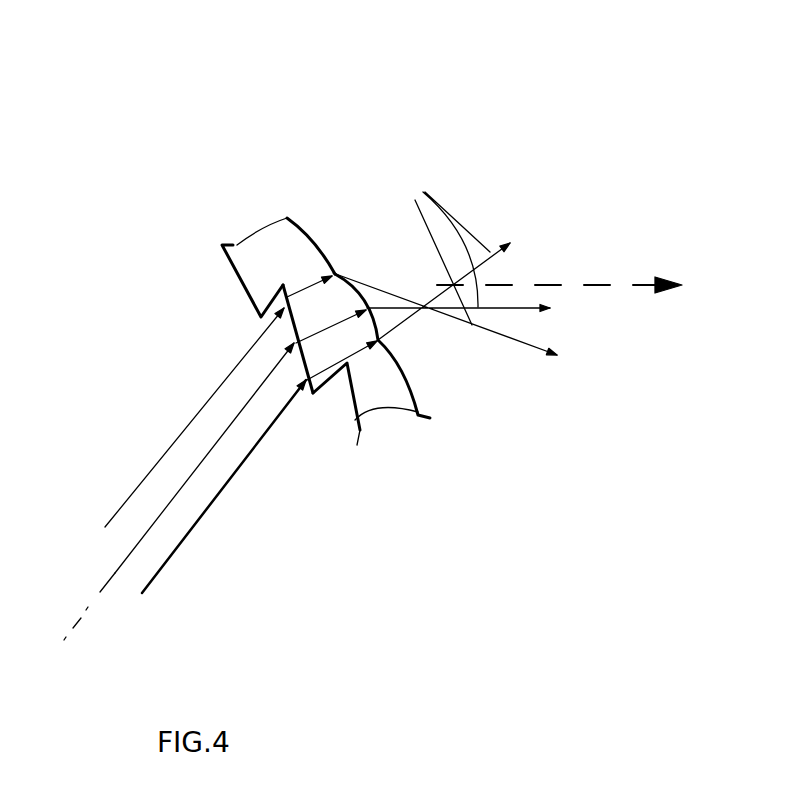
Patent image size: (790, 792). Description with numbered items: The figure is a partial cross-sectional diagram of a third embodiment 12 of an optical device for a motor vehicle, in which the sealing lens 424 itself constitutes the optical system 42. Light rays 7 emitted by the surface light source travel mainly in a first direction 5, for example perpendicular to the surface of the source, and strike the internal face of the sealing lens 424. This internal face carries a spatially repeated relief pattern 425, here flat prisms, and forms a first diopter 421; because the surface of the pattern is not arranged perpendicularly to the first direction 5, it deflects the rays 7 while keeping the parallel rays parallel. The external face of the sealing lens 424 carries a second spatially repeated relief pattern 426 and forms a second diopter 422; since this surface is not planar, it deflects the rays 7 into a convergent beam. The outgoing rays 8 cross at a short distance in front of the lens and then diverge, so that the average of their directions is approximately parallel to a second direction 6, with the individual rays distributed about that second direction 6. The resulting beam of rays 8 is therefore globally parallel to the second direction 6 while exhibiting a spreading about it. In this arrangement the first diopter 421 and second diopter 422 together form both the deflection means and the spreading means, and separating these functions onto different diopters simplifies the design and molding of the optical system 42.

The optical system 42 is at (351, 165).
The first diopter 421 is at (242, 287).
The second diopter 422 is at (302, 233).
The sealing lens 424 is at (380, 405).
The relief pattern 425 is at (300, 386).
The relief pattern 426 is at (375, 318).
The third embodiment 12 is at (140, 278).
The beam of rays 7 is at (181, 542).
The first direction 5 is at (98, 597).
The outgoing rays 8 is at (445, 268).
The second direction 6 is at (563, 284).